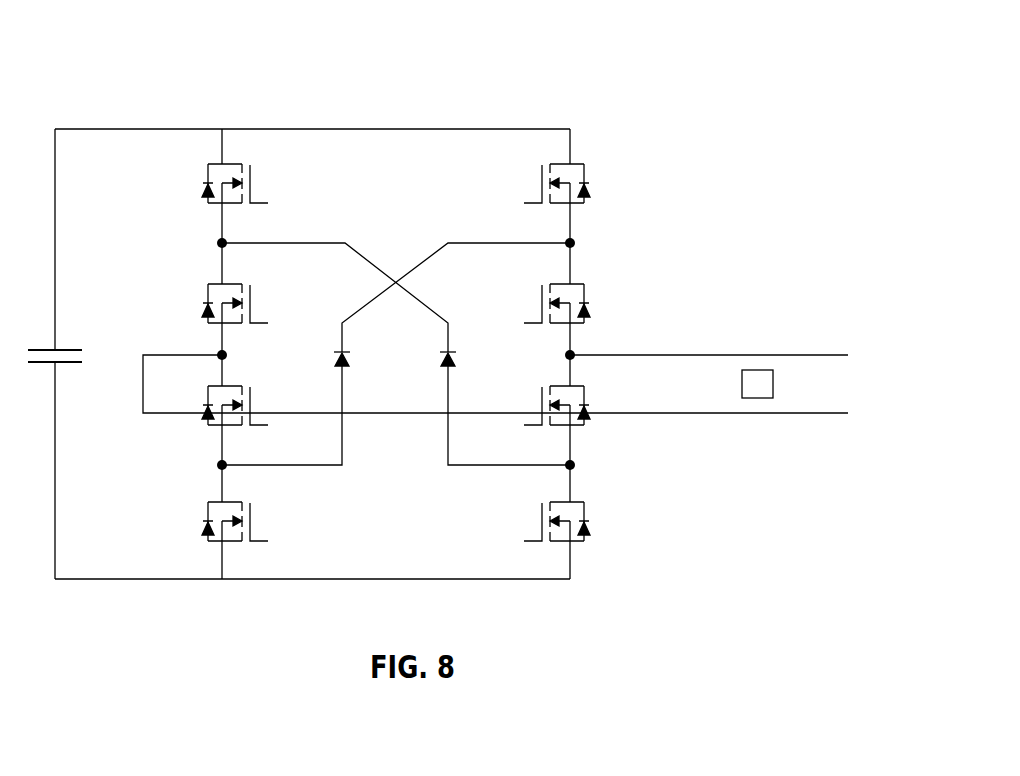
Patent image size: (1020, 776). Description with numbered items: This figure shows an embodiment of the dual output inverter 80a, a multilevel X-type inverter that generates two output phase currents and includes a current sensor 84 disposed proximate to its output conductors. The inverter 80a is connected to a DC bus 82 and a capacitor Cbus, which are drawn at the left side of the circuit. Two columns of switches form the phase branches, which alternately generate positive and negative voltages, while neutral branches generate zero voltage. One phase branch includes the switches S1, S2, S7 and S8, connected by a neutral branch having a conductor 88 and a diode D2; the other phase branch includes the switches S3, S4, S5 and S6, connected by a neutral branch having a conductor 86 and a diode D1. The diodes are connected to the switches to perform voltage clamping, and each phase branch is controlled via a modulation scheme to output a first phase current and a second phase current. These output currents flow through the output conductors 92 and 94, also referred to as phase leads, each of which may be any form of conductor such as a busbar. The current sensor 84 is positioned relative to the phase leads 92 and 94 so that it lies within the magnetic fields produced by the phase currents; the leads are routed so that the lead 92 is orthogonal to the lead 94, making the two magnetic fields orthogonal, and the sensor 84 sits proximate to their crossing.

The dual output inverter 80a is at (484, 88).
The DC bus 82 is at (115, 128).
The current sensor 84 is at (757, 369).
The conductor 86 is at (448, 452).
The conductor 88 is at (436, 251).
The output conductor 92 is at (716, 354).
The output conductor 94 is at (710, 415).
The switch S1 is at (587, 200).
The switch S2 is at (586, 318).
The switch S3 is at (586, 422).
The switch S4 is at (586, 535).
The switch S5 is at (205, 195).
The switch S6 is at (207, 312).
The switch S7 is at (207, 420).
The switch S8 is at (252, 513).
The diode D1 is at (442, 355).
The diode D2 is at (336, 355).
The bus capacitor Cbus is at (70, 350).